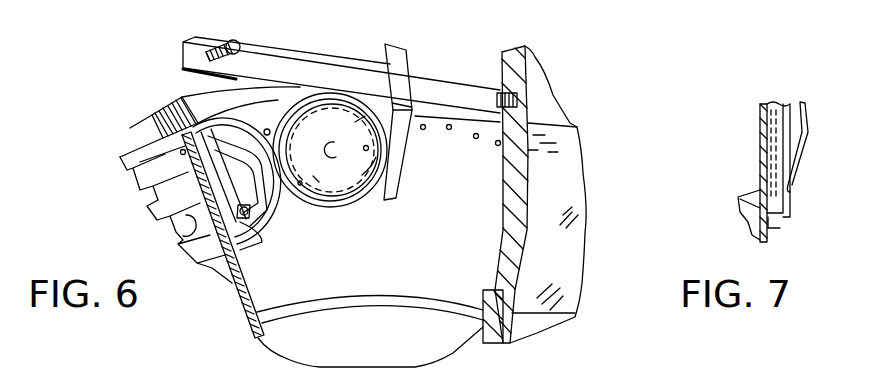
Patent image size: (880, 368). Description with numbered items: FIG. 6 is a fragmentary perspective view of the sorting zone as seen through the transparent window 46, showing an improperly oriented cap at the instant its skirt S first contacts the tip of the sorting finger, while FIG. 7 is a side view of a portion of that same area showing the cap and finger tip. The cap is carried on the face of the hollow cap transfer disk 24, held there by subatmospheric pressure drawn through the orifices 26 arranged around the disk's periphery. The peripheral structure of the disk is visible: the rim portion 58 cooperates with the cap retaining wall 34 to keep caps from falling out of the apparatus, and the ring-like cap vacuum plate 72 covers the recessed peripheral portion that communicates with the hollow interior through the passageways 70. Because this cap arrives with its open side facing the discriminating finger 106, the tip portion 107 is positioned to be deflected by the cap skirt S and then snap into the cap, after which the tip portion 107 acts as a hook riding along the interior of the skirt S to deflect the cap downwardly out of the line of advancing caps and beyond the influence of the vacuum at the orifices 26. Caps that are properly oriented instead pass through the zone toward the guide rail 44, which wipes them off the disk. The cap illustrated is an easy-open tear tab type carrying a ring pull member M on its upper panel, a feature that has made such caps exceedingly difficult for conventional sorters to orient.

In FIG. 6, the cap transfer disk 24 is at (242, 312).
In FIG. 6, the orifices 26 is at (182, 153).
In FIG. 6, the cap retaining wall 34 is at (165, 95).
In FIG. 6, the guide rail 44 is at (322, 54).
In FIG. 6, the transparent window 46 is at (509, 198).
In FIG. 6, the rim portion 58 is at (177, 165).
In FIG. 6, the passageways 70 is at (197, 231).
In FIG. 6, the cap vacuum plate 72 is at (185, 188).
In FIG. 7, the cap vacuum plate 72 is at (762, 170).
In FIG. 6, the discriminating finger 106 is at (408, 63).
In FIG. 6, the tip portion 107 is at (403, 146).
In FIG. 7, the tip portion 107 is at (793, 160).
In FIG. 6, the ring pull member M is at (272, 195).
In FIG. 6, the cap skirt S is at (368, 195).
In FIG. 7, the cap skirt S is at (774, 216).